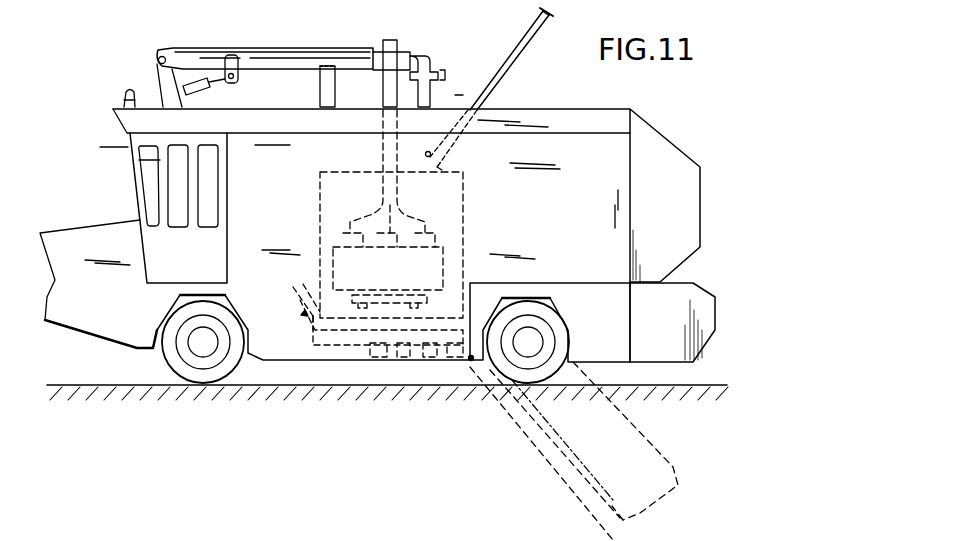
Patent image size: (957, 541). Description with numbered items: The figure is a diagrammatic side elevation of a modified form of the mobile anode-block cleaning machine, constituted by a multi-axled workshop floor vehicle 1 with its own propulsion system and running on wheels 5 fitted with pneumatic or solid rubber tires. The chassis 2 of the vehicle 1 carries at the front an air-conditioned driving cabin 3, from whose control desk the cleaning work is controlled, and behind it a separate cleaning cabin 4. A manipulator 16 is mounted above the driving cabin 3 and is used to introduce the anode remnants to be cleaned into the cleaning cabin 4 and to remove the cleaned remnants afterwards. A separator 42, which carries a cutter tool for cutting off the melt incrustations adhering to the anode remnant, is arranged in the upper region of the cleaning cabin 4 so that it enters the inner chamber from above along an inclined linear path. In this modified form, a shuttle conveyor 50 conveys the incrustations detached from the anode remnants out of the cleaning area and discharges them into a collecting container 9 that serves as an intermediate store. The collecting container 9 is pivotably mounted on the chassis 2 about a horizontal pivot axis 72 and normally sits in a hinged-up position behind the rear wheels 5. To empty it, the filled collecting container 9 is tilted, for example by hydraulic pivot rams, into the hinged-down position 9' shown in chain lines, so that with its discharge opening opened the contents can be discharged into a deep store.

The vehicle 1 is at (459, 92).
The chassis 2 is at (283, 347).
The driving cabin 3 is at (168, 175).
The cleaning cabin 4 is at (347, 203).
The wheels 5 is at (197, 373).
The collecting container 9 is at (592, 300).
The tilted position of collecting container 9' is at (574, 451).
The manipulator 16 is at (281, 46).
The separator 42 is at (519, 77).
The shuttle conveyor 50 is at (397, 357).
The horizontal pivot axis 72 is at (468, 364).